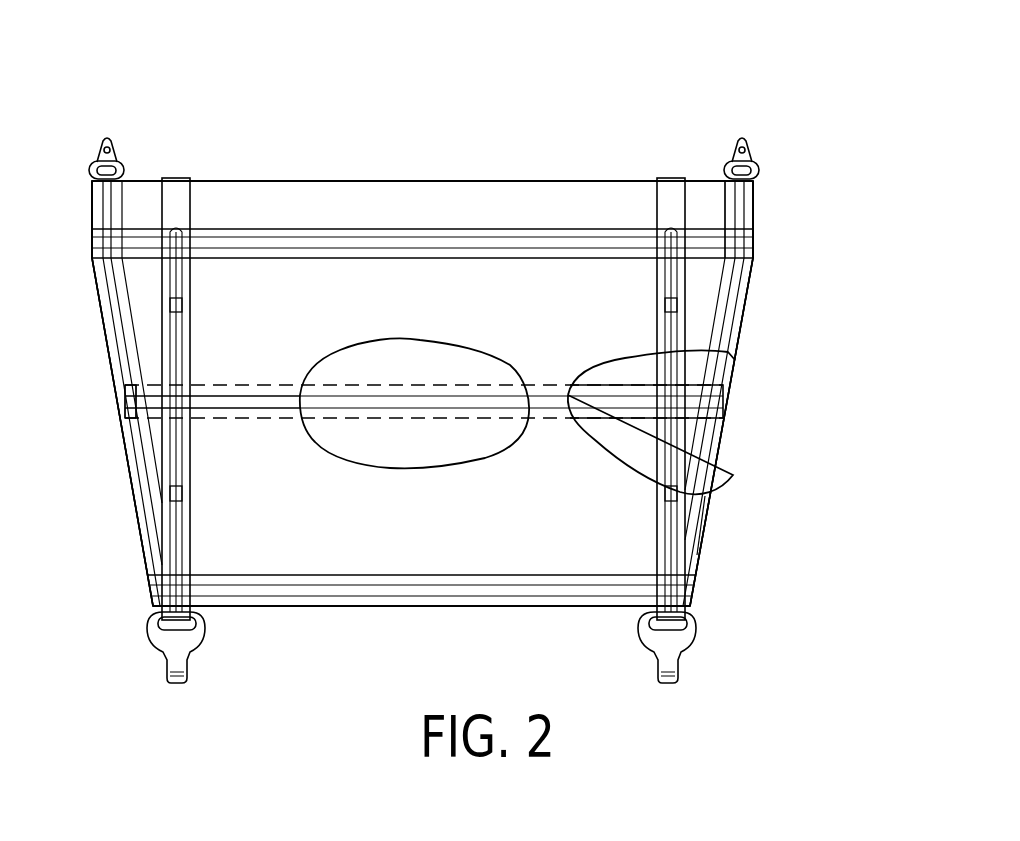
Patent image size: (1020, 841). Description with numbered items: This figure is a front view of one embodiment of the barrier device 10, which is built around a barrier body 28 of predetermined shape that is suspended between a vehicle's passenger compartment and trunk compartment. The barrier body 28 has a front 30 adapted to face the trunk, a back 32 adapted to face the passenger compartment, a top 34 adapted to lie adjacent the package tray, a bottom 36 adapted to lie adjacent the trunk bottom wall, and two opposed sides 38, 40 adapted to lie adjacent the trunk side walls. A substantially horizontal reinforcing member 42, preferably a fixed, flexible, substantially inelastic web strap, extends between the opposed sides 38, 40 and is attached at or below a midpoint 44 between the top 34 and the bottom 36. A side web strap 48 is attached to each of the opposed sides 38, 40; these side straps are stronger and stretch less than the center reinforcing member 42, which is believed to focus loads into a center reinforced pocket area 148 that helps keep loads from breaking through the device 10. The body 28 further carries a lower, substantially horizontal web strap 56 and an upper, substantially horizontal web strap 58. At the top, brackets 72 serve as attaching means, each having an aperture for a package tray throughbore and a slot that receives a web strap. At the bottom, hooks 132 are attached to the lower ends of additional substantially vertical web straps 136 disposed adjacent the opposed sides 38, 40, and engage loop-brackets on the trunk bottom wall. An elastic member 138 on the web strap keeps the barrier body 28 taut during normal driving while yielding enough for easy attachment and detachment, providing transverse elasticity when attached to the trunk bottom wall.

The barrier device 10 is at (843, 185).
The barrier body 28 is at (320, 548).
The front 30 is at (707, 515).
The back 32 is at (693, 374).
The top 34 is at (455, 181).
The bottom 36 is at (460, 606).
The opposed side 38 is at (113, 383).
The opposed side 40 is at (748, 300).
The reinforcing member 42 is at (723, 402).
The midpoint 44 is at (112, 414).
The side web strap 48 is at (107, 292).
The lower horizontal web strap 56 is at (348, 590).
The upper horizontal web strap 58 is at (277, 247).
The bracket 72 is at (756, 150).
The hook 132 is at (180, 680).
The vertical web strap 136 is at (662, 178).
The elastic member 138 is at (177, 457).
The reinforced pocket area 148 is at (470, 445).